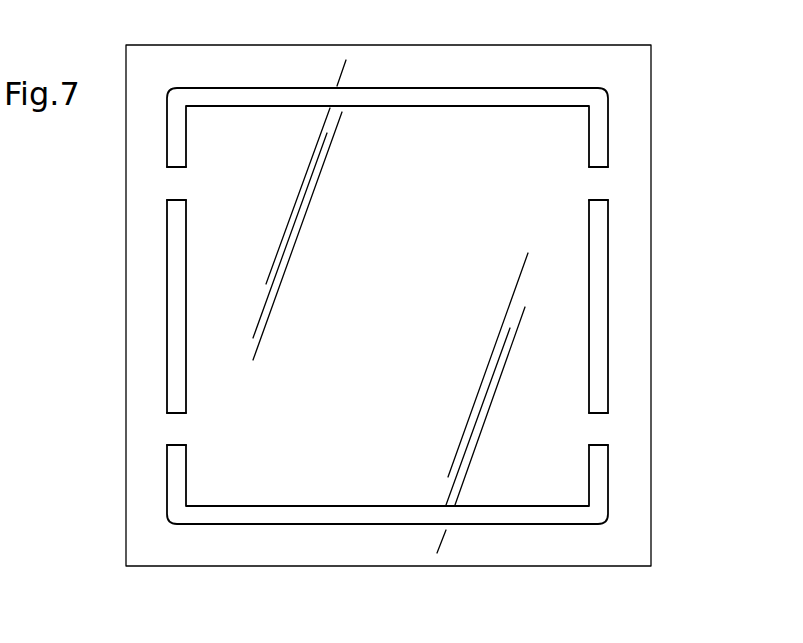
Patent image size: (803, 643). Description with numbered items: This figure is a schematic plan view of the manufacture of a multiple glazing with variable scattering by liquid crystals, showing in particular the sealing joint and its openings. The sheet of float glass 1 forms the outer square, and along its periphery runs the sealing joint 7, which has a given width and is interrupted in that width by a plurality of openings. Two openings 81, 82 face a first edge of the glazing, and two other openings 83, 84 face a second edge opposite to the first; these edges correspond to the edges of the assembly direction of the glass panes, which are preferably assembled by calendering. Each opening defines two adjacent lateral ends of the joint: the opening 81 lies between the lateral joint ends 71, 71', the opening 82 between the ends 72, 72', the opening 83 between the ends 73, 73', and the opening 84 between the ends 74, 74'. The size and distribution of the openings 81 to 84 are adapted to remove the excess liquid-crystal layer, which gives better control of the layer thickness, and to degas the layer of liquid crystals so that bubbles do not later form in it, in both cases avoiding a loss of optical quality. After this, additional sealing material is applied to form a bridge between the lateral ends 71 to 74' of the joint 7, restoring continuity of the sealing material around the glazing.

The sheet of float glass 1 is at (636, 508).
The sealing joint 7 is at (245, 92).
The lateral joint end 71 is at (213, 162).
The lateral joint end 71' is at (129, 211).
The lateral joint end 72 is at (213, 407).
The lateral joint end 72' is at (129, 456).
The lateral joint end 73 is at (569, 162).
The lateral joint end 73' is at (648, 213).
The lateral joint end 74 is at (569, 407).
The lateral joint end 74' is at (650, 456).
The opening 81 is at (175, 182).
The opening 82 is at (175, 428).
The opening 83 is at (600, 182).
The opening 84 is at (600, 431).